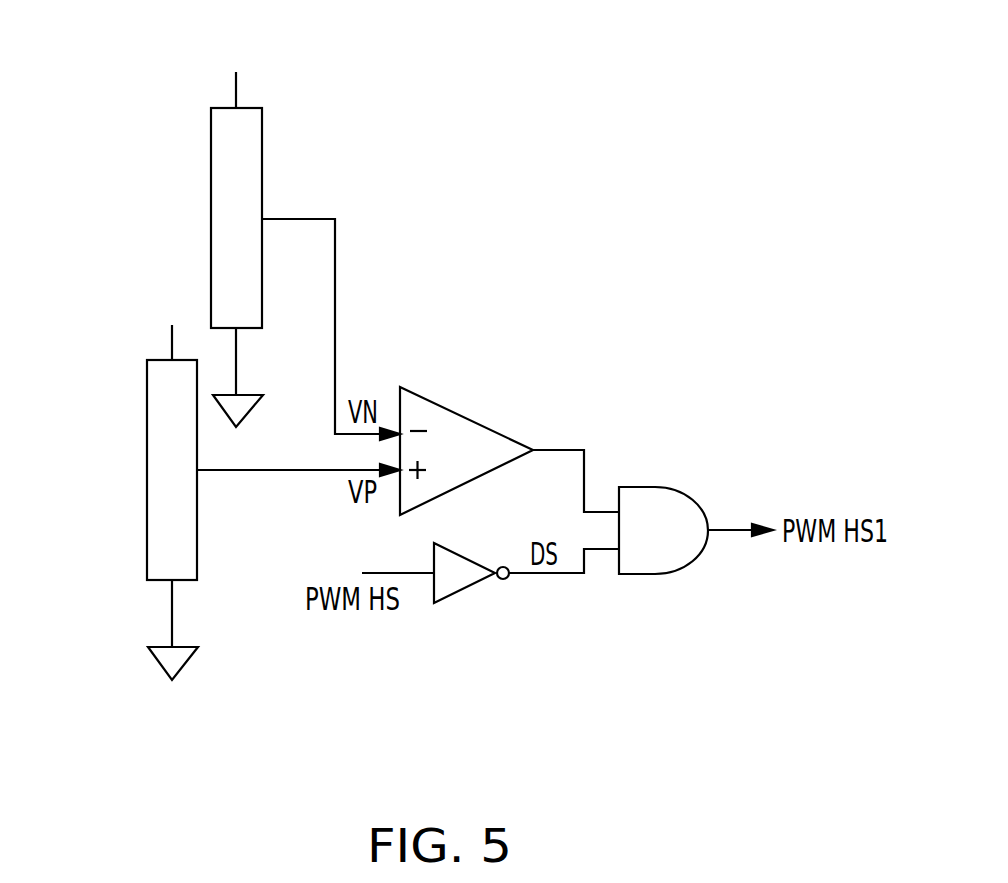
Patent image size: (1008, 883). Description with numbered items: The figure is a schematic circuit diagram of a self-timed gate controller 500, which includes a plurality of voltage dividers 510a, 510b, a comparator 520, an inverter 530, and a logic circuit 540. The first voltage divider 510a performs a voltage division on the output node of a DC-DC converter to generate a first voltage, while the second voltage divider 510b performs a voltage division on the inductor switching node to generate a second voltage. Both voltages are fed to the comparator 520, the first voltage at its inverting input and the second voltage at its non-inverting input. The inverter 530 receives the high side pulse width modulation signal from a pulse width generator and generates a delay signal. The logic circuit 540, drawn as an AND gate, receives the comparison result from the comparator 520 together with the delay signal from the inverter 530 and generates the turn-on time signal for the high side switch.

The self-timed gate controller 500 is at (727, 691).
The first voltage divider 510a is at (262, 138).
The second voltage divider 510b is at (147, 402).
The comparator 520 is at (470, 418).
The inverter 530 is at (468, 585).
The logic circuit 540 is at (672, 487).